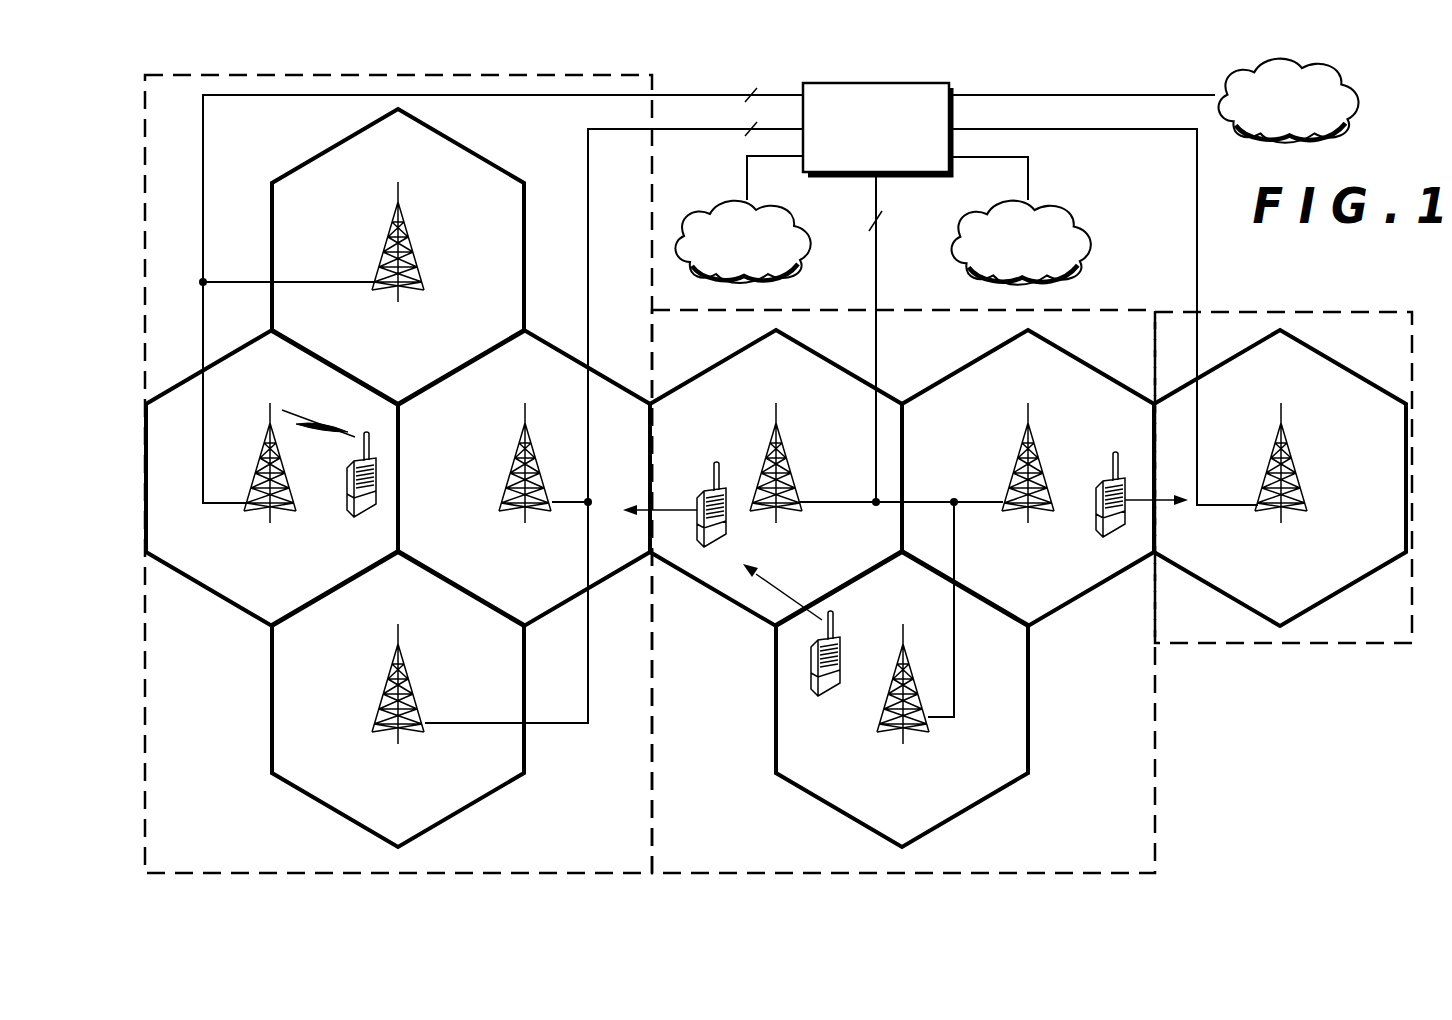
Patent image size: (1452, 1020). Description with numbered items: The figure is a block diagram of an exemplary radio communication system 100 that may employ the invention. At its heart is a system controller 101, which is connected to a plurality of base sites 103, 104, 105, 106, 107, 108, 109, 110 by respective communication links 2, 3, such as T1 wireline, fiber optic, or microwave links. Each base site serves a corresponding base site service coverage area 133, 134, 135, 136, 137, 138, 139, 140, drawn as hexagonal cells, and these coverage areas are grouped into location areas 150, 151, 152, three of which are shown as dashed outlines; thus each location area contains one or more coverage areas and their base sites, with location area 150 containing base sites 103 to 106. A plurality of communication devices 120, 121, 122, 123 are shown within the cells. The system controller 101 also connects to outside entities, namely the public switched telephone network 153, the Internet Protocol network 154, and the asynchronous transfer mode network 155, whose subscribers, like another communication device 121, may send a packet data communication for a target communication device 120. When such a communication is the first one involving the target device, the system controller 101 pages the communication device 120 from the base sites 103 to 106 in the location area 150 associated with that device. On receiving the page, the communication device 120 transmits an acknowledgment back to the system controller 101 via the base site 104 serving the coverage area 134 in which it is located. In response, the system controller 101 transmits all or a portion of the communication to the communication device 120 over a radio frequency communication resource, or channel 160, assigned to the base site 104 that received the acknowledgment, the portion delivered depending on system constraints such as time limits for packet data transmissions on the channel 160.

The radio communication system 100 is at (778, 478).
The system controller 101 is at (882, 83).
The communication links 2 is at (746, 103).
The communication link 3 is at (868, 219).
The base site 103 is at (418, 243).
The base site 104 is at (262, 452).
The base site 105 is at (508, 450).
The base site 106 is at (385, 705).
The base site 107 is at (796, 445).
The base site 108 is at (1045, 468).
The base site 109 is at (897, 740).
The base site 110 is at (1302, 478).
The communication device 120 is at (343, 516).
The communication device 121 is at (697, 492).
The communication device 122 is at (1095, 535).
The communication device 123 is at (835, 700).
The base site service coverage area 133 is at (468, 143).
The base site service coverage area 134 is at (210, 593).
The base site service coverage area 135 is at (550, 340).
The base site service coverage area 136 is at (462, 808).
The base site service coverage area 137 is at (710, 588).
The base site service coverage area 138 is at (1078, 372).
The base site service coverage area 139 is at (968, 813).
The base site service coverage area 140 is at (1357, 587).
The location area 150 is at (478, 873).
The location area 151 is at (988, 873).
The location area 152 is at (1262, 643).
The public switched telephone network (PSTN) 153 is at (1092, 268).
The Internet Protocol (IP) network 154 is at (1358, 135).
The asynchronous transfer mode (ATM) network 155 is at (812, 270).
The RF communication resource (channel) 160 is at (318, 420).